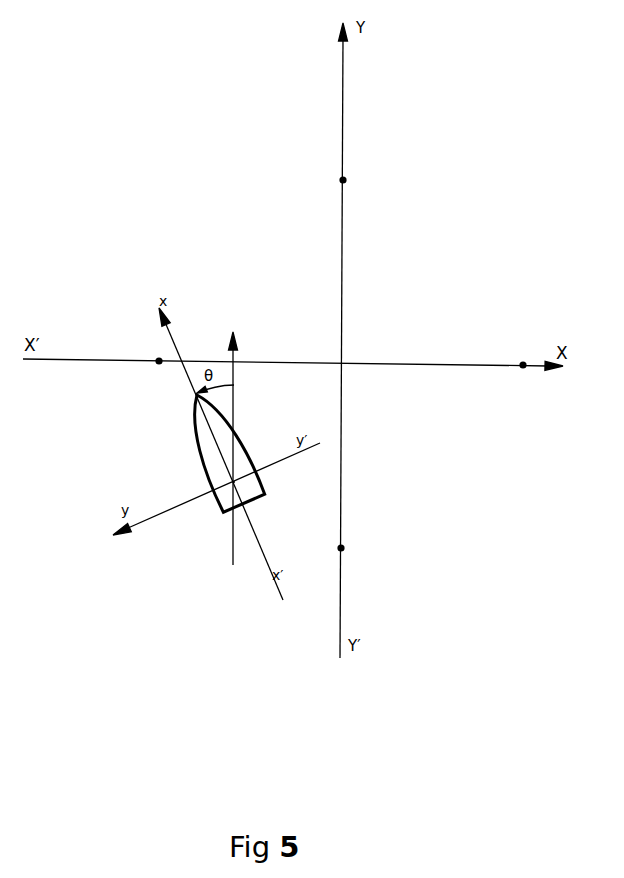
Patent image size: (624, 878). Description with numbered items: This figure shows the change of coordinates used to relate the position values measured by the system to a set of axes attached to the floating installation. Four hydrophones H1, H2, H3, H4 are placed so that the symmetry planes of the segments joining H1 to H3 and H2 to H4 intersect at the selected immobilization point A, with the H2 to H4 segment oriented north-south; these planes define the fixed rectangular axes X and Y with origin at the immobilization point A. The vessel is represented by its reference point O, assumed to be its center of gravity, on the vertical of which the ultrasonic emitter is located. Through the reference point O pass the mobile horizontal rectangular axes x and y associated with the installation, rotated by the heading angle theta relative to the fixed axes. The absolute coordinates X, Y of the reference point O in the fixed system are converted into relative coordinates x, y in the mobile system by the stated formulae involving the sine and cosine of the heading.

The hydrophone H1 is at (149, 351).
The hydrophone H2 is at (355, 546).
The hydrophone H3 is at (515, 354).
The hydrophone H4 is at (356, 181).
The selected immobilization point A is at (352, 350).
The reference point O is at (224, 481).